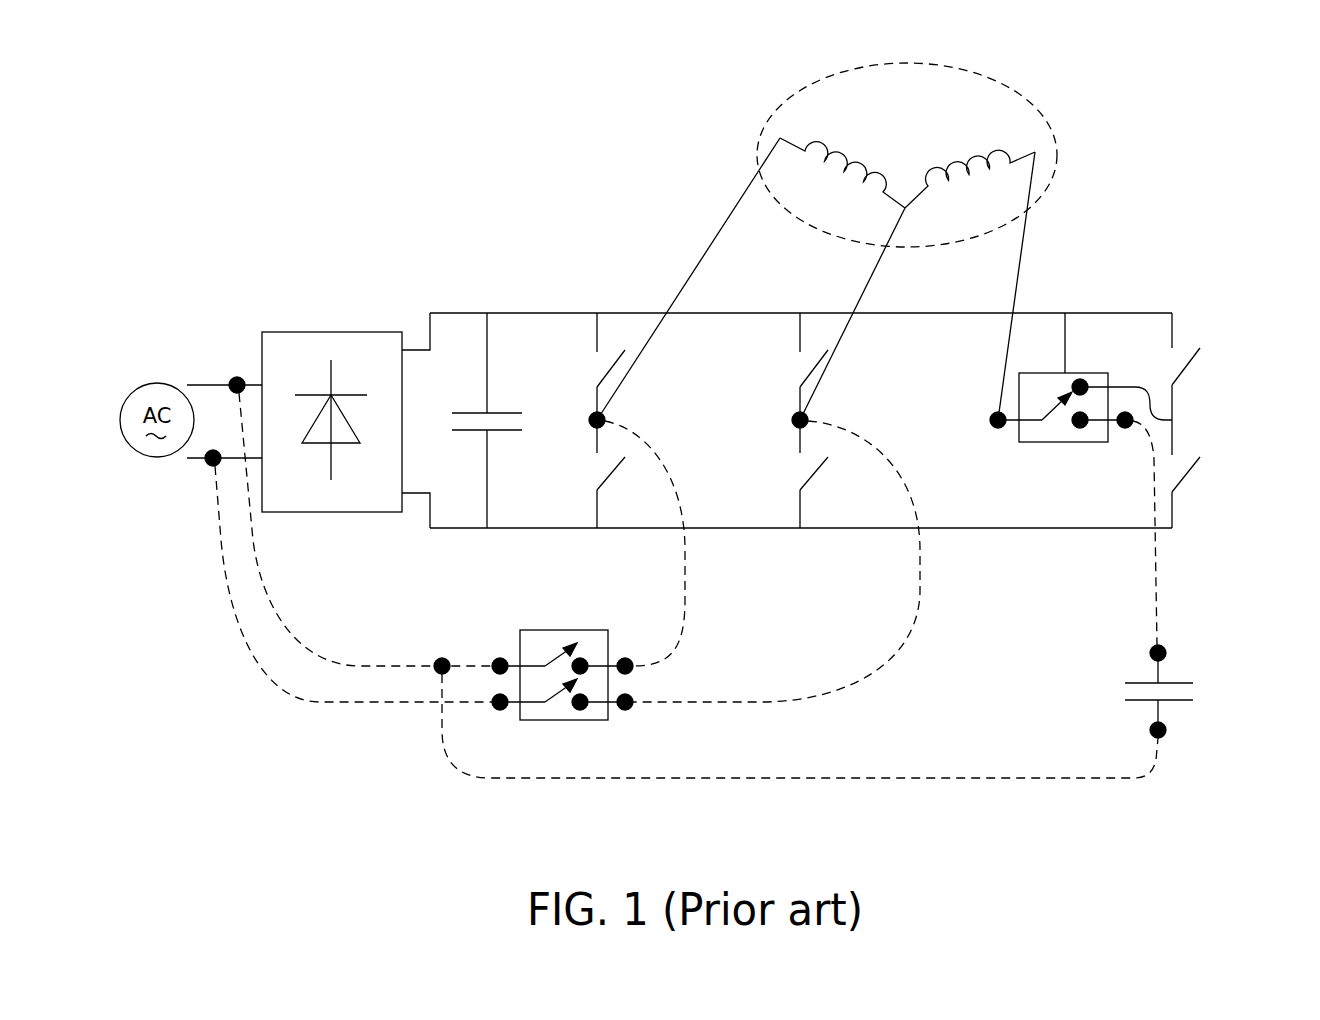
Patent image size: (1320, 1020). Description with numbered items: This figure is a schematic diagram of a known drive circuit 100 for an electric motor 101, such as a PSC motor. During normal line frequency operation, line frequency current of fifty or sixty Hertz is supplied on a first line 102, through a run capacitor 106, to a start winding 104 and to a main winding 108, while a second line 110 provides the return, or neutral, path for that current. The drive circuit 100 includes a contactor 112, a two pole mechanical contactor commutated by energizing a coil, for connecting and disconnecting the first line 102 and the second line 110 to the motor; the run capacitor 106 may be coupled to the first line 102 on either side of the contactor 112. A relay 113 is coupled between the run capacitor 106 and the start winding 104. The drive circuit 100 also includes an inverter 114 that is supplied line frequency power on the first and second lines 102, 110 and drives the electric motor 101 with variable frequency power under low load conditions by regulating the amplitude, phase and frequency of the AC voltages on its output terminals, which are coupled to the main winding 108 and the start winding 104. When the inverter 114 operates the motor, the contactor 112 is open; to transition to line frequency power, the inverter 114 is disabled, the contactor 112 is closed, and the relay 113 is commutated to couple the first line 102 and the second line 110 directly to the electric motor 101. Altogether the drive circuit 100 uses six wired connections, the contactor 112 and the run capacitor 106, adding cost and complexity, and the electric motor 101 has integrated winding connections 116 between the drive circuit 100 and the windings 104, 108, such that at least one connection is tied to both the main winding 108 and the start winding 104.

The drive circuit 100 is at (873, 420).
The electric motor 101 is at (815, 82).
The first line L1 102 is at (196, 385).
The start winding 104 is at (1008, 127).
The run capacitor 106 is at (1125, 683).
The main winding 108 is at (796, 187).
The second line L2 110 is at (196, 460).
The contactor 112 is at (540, 630).
The relay 113 is at (1065, 313).
The inverter 114 is at (1205, 416).
The integrated winding connections 116 is at (630, 281).